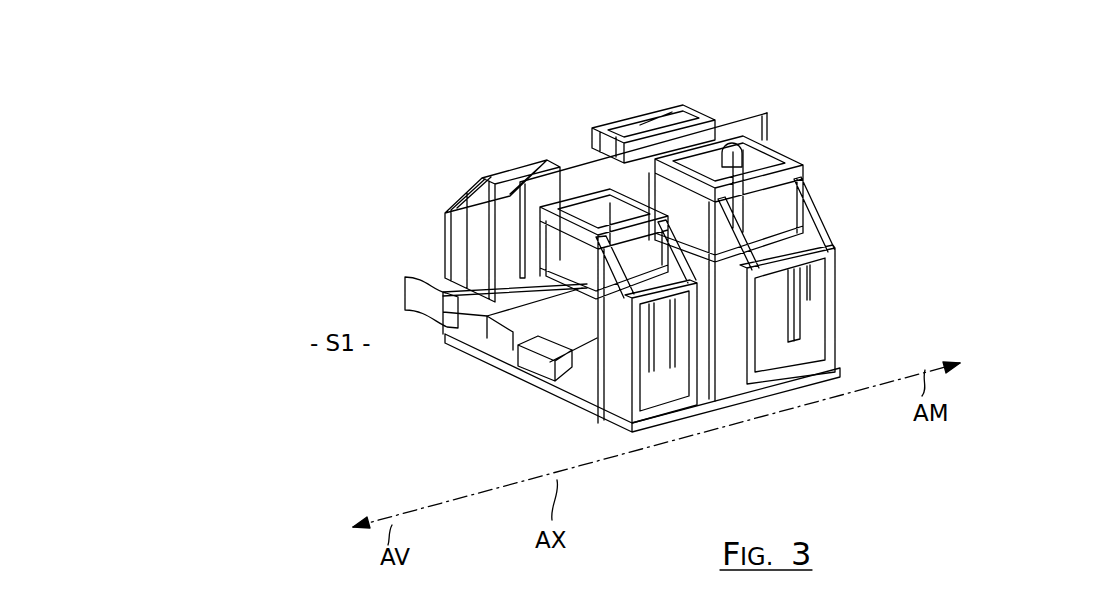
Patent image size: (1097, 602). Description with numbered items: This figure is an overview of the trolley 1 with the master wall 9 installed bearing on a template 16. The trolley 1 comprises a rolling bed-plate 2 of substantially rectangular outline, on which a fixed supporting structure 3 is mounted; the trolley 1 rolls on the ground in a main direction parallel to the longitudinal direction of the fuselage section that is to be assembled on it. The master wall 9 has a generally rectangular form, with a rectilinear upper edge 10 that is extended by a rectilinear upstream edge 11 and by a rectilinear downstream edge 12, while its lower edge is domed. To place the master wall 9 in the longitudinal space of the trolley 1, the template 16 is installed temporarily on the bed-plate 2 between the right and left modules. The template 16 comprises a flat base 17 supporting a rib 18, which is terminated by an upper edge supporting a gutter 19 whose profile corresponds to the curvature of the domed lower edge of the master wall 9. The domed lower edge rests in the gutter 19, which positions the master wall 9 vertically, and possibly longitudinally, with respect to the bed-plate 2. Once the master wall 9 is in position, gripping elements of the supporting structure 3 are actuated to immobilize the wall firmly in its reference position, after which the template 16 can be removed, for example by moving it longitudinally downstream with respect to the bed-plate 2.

The trolley 1 is at (836, 94).
The rolling bed-plate 2 is at (788, 383).
The fixed supporting structure 3 is at (852, 193).
The master wall 9 is at (583, 182).
The upper edge 10 is at (657, 150).
The upstream edge 11 is at (770, 138).
The downstream edge 12 is at (518, 217).
The template 16 is at (472, 335).
The flat base 17 is at (565, 350).
The rib 18 is at (535, 313).
The gutter 19 is at (433, 280).